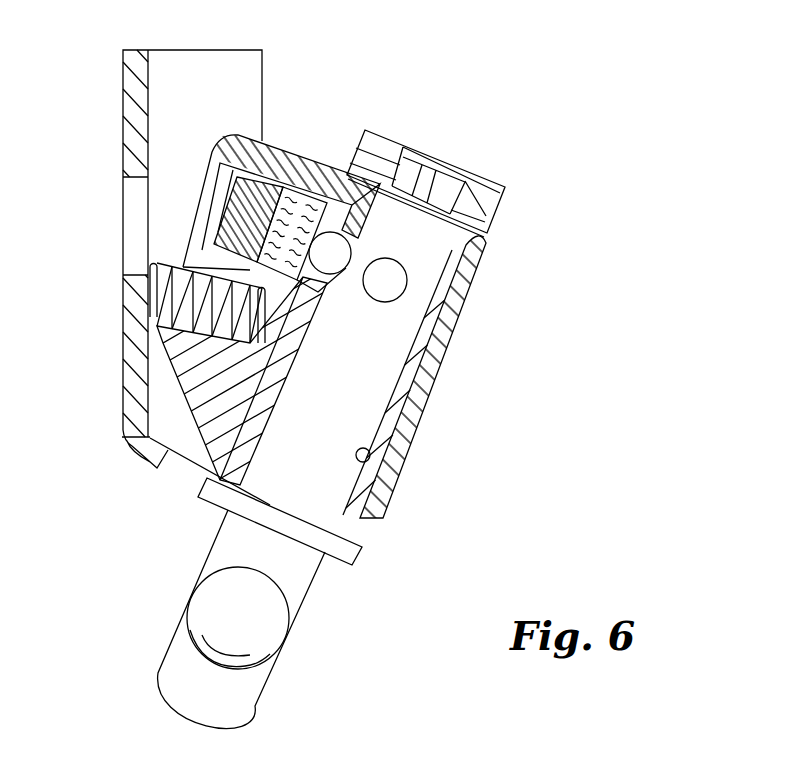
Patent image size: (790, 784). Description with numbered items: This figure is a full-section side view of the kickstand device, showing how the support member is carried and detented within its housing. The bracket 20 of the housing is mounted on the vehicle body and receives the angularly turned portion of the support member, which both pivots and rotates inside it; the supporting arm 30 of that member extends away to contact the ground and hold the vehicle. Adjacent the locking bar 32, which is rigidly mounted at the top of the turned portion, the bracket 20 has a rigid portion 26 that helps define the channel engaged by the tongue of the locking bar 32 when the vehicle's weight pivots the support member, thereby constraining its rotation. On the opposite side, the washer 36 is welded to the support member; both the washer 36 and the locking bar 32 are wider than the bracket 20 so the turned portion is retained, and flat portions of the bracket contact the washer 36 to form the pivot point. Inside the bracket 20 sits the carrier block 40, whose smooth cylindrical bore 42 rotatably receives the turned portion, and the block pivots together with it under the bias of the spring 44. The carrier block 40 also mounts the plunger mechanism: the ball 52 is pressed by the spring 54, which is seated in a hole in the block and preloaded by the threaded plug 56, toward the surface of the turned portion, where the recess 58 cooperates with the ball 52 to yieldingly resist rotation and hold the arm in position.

The bracket 20 is at (482, 258).
The rigid portion 26 is at (252, 72).
The supporting arm 30 is at (263, 626).
The locking bar 32 is at (487, 197).
The washer 36 is at (355, 550).
The carrier block 40 is at (407, 378).
The bore 42 is at (368, 462).
The spring 44 is at (152, 290).
The ball 52 is at (338, 253).
The spring 54 is at (300, 212).
The plug 56 is at (253, 203).
The recess 58 is at (395, 299).